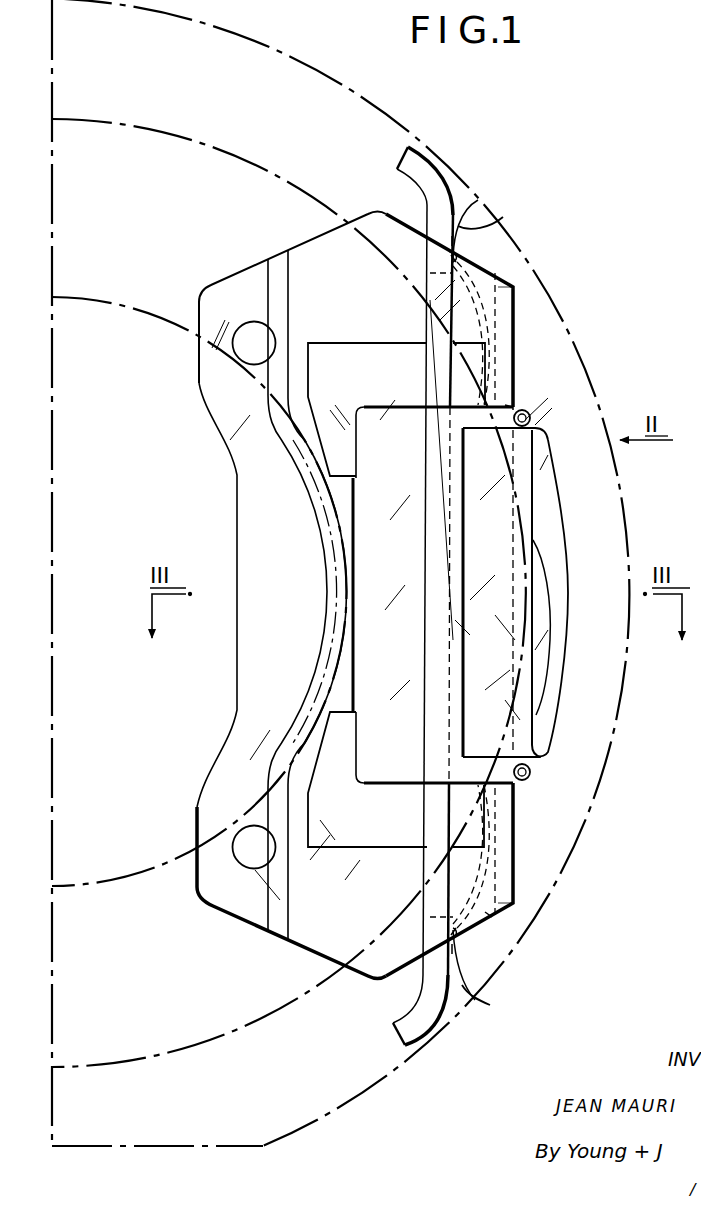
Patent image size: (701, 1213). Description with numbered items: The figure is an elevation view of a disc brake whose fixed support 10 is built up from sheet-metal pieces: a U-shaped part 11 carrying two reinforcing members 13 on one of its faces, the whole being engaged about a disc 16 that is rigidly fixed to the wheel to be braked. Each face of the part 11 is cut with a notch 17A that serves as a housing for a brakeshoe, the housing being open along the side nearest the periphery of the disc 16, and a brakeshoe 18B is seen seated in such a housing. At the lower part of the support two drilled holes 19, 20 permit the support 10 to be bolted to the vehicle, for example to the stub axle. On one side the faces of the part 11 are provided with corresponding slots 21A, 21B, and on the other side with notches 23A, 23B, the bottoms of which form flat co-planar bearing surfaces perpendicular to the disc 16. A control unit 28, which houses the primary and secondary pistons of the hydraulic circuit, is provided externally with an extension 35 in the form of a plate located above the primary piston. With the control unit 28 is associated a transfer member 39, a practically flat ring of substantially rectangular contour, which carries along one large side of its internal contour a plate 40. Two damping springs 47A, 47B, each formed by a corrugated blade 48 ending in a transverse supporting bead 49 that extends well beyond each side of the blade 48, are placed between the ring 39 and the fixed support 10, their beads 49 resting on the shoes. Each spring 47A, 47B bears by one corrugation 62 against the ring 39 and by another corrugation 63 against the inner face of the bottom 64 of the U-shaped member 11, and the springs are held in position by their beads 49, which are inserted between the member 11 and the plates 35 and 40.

The fixed support 10 is at (350, 963).
The U-shaped part 11 is at (484, 906).
The reinforcing members 13 is at (343, 362).
The disc 16 is at (186, 1052).
The notch 17A is at (518, 408).
The brakeshoe 18B is at (372, 597).
The drilled hole 19 is at (238, 346).
The drilled hole 20 is at (238, 848).
The slot 21A is at (456, 934).
The slot 21B is at (453, 931).
The notch 23A is at (456, 258).
The notch 23B is at (453, 258).
The control unit 28 is at (564, 515).
The extension 35 is at (550, 566).
The transfer member 39 is at (421, 1043).
The plate 40 is at (526, 739).
The spring 47A is at (466, 992).
The spring 47B is at (470, 206).
The corrugated blade 48 is at (494, 610).
The transverse supporting bead 49 is at (531, 418).
The corrugation 62 is at (452, 238).
The corrugation 63 is at (497, 332).
The bottom 64 is at (508, 298).